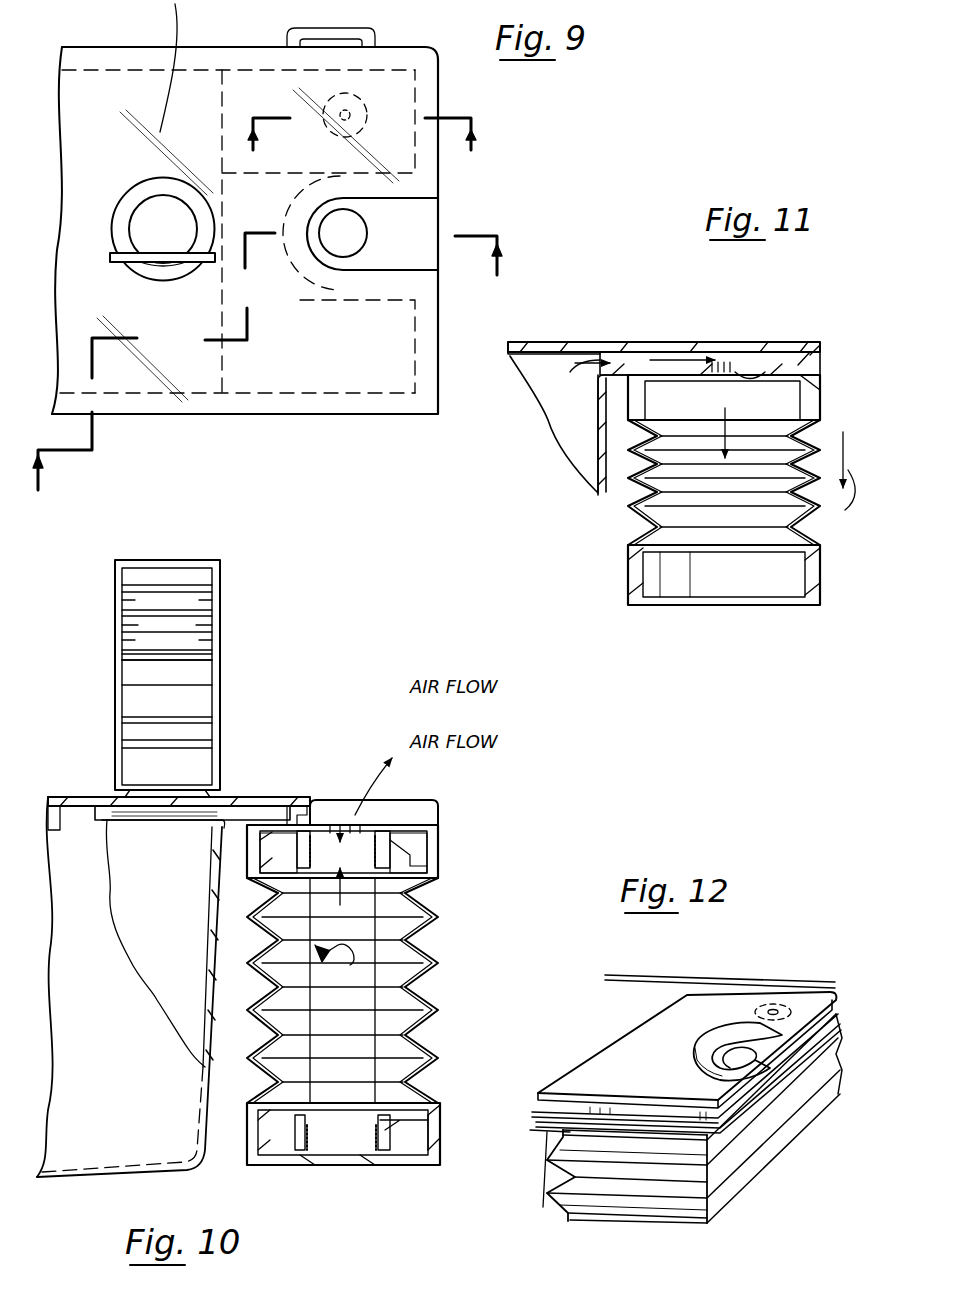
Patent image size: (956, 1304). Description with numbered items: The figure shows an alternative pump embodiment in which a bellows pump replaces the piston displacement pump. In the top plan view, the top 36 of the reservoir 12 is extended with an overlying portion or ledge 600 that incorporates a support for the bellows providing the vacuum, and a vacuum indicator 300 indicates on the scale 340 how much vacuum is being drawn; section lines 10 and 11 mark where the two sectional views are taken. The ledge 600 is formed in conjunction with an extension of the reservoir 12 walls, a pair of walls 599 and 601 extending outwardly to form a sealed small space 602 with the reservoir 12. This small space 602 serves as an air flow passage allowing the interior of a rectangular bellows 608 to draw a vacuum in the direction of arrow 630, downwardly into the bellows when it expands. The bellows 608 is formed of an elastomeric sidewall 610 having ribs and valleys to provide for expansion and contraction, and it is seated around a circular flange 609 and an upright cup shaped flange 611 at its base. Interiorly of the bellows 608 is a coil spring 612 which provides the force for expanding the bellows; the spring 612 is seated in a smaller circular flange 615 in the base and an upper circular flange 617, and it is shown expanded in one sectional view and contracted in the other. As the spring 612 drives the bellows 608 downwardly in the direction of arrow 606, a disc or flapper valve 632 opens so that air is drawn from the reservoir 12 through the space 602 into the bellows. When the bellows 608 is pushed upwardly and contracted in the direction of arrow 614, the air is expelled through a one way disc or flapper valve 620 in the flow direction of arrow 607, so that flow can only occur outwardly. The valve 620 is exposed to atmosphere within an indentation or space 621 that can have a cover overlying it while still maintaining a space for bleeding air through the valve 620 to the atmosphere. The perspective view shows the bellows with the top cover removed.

In FIG. 9, the reservoir 12 is at (112, 86).
In FIG. 10, the reservoir 12 is at (172, 935).
In FIG. 12, the reservoir 12 is at (645, 988).
In FIG. 11, the top 36 is at (535, 345).
In FIG. 9, the vacuum indicator 300 is at (148, 183).
In FIG. 10, the vacuum indicator 300 is at (238, 648).
In FIG. 10, the scale 340 is at (212, 622).
In FIG. 9, the wall 599 is at (300, 372).
In FIG. 11, the wall 599 is at (680, 342).
In FIG. 10, the wall 599 is at (232, 710).
In FIG. 9, the ledge 600 is at (450, 377).
In FIG. 11, the ledge 600 is at (780, 345).
In FIG. 10, the ledge 600 is at (442, 846).
In FIG. 12, the ledge 600 is at (762, 972).
In FIG. 11, the lower wall 601 is at (650, 345).
In FIG. 10, the lower wall 601 is at (255, 735).
In FIG. 12, the lower wall 601 is at (698, 1005).
In FIG. 11, the small space 602 is at (745, 352).
In FIG. 10, the small space 602 is at (275, 808).
In FIG. 12, the small space 602 is at (752, 1002).
In FIG. 11, the arrow 606 is at (840, 484).
In FIG. 10, the arrow 607 is at (342, 969).
In FIG. 11, the rectangular bellows 608 is at (630, 525).
In FIG. 10, the rectangular bellows 608 is at (432, 1000).
In FIG. 12, the rectangular bellows 608 is at (762, 1178).
In FIG. 11, the circular flange 609 is at (822, 395).
In FIG. 10, the circular flange 609 is at (250, 850).
In FIG. 11, the elastomeric sidewall 610 is at (628, 495).
In FIG. 10, the elastomeric sidewall 610 is at (430, 912).
In FIG. 12, the elastomeric sidewall 610 is at (612, 1208).
In FIG. 10, the upright cup shaped flange 611 is at (440, 1137).
In FIG. 10, the coil spring 612 is at (390, 1110).
In FIG. 10, the arrow 614 is at (473, 988).
In FIG. 10, the smaller circular flange 615 is at (404, 1166).
In FIG. 10, the upper circular flange 617 is at (440, 828).
In FIG. 9, the flapper valve 620 is at (418, 236).
In FIG. 10, the flapper valve 620 is at (355, 813).
In FIG. 12, the flapper valve 620 is at (700, 1050).
In FIG. 9, the indentation 621 is at (365, 233).
In FIG. 12, the indentation 621 is at (760, 1063).
In FIG. 11, the arrow 630 is at (568, 340).
In FIG. 9, the flapper valve 632 is at (340, 115).
In FIG. 11, the flapper valve 632 is at (790, 360).
In FIG. 12, the flapper valve 632 is at (775, 1010).
In FIG. 9, the section line 10 is at (269, 378).
In FIG. 9, the section line 11 is at (369, 119).